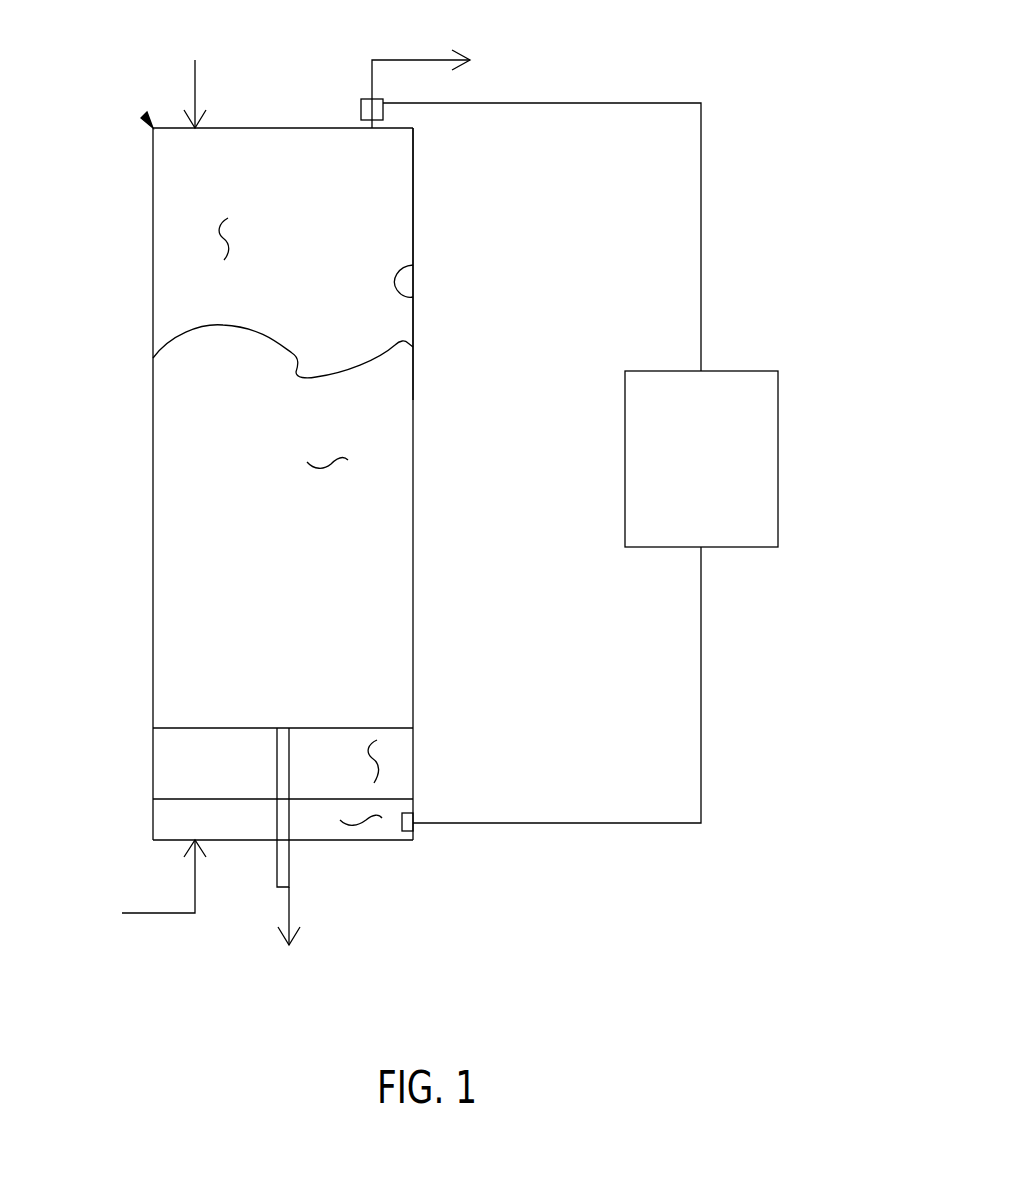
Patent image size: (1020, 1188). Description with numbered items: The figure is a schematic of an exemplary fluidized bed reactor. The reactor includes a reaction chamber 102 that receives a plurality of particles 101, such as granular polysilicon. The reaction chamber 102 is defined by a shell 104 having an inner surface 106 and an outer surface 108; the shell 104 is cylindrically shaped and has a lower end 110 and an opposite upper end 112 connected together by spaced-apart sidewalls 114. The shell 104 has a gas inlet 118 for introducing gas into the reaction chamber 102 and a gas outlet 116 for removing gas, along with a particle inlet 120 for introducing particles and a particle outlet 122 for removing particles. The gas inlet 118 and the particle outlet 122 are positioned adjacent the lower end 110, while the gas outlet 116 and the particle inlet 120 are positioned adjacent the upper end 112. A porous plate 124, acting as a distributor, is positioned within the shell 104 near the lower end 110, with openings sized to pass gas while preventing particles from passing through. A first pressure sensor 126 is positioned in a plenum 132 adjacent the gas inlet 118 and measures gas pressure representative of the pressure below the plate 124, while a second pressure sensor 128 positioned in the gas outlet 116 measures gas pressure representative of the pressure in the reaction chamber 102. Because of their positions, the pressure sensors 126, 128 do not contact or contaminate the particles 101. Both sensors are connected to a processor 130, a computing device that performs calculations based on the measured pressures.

The particles 101 is at (333, 468).
The reaction chamber 102 is at (217, 240).
The shell 104 is at (145, 116).
The inner surface 106 is at (413, 265).
The outer surface 108 is at (413, 207).
The lower end 110 is at (330, 843).
The upper end 112 is at (283, 128).
The sidewalls 114 is at (153, 548).
The gas outlet 116 is at (371, 70).
The gas inlet 118 is at (195, 891).
The particle inlet 120 is at (193, 72).
The particle outlet 122 is at (291, 880).
The plate 124 is at (380, 759).
The first pressure sensor 126 is at (413, 817).
The second pressure sensor 128 is at (383, 112).
The processor 130 is at (716, 477).
The plenum 132 is at (362, 826).